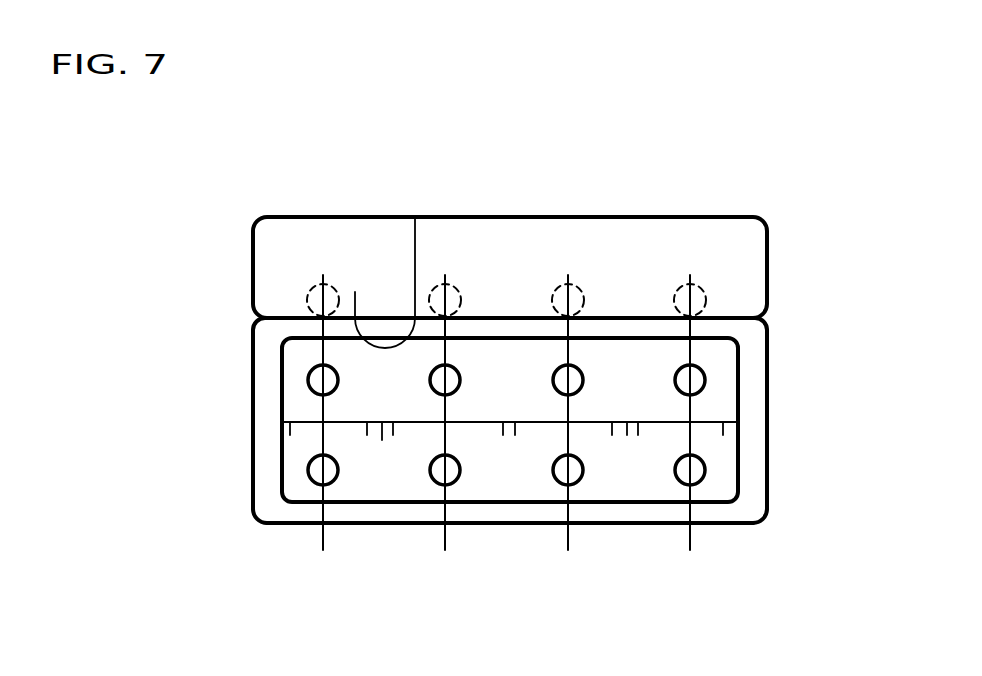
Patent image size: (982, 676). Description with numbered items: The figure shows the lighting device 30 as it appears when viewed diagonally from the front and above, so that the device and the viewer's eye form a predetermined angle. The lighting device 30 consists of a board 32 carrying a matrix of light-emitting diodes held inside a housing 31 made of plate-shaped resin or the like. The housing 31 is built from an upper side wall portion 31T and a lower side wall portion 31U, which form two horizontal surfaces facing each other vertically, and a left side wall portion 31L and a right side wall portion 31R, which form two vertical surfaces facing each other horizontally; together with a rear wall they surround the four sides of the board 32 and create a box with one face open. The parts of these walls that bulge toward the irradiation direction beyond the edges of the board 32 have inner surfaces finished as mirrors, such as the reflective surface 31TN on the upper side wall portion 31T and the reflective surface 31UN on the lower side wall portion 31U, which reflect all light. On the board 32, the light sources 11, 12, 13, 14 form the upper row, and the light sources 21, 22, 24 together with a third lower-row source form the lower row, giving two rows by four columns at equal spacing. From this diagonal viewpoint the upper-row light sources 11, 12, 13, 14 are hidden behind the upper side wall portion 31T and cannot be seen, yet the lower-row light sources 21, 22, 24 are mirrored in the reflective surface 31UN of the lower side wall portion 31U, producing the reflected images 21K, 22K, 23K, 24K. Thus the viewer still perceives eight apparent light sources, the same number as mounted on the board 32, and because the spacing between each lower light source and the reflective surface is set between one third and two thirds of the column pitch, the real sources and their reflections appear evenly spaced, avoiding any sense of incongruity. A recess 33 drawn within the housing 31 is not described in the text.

The lighting device 30 is at (398, 148).
The housing 31 is at (739, 214).
The upper side wall portion 31T is at (385, 227).
The reflective surface 31TN is at (363, 306).
The right side wall portion 31R is at (253, 430).
The left side wall portion 31L is at (760, 403).
The lower side wall portion 31U is at (503, 510).
The reflective surface 31UN is at (615, 492).
The board 32 is at (628, 355).
The recess 33 is at (347, 355).
The light source 11 is at (308, 297).
The light source 12 is at (462, 288).
The light source 13 is at (558, 288).
The light source 14 is at (705, 300).
The light source 21 is at (338, 382).
The light source 22 is at (460, 385).
The light source 24 is at (674, 382).
The reflected image 21K is at (338, 472).
The reflected image 22K is at (460, 475).
The reflected image 23K is at (554, 463).
The reflected image 24K is at (673, 472).